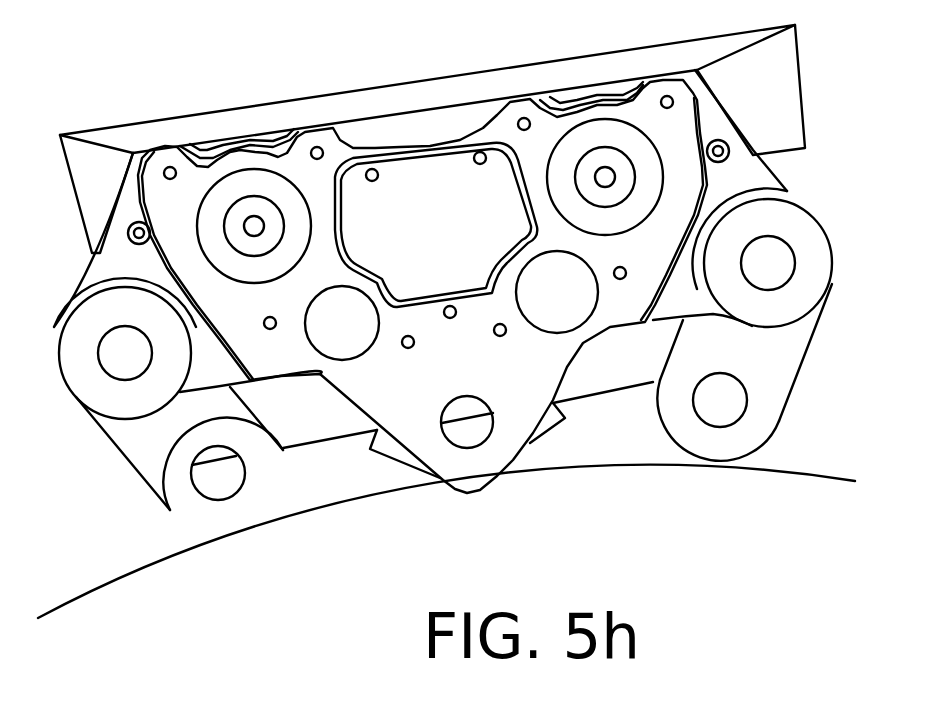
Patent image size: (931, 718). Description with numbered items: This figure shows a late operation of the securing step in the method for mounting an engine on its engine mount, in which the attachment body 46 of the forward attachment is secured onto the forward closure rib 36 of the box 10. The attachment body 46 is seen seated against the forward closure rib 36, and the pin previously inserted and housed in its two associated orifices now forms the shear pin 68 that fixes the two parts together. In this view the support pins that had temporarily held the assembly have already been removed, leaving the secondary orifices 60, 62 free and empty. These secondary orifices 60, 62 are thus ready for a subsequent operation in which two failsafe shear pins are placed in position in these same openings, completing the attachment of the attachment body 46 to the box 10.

The box 10 is at (340, 84).
The forward closure rib 36 is at (468, 118).
The attachment body 46 is at (740, 180).
The shear pin 68 is at (197, 208).
The secondary orifice 60 is at (304, 318).
The secondary orifice 62 is at (525, 265).